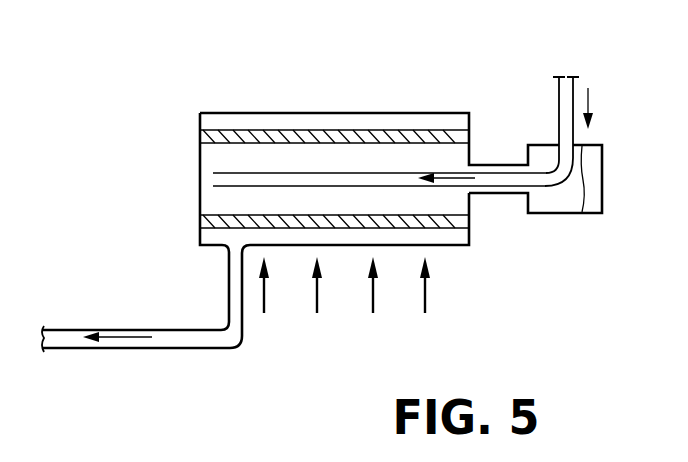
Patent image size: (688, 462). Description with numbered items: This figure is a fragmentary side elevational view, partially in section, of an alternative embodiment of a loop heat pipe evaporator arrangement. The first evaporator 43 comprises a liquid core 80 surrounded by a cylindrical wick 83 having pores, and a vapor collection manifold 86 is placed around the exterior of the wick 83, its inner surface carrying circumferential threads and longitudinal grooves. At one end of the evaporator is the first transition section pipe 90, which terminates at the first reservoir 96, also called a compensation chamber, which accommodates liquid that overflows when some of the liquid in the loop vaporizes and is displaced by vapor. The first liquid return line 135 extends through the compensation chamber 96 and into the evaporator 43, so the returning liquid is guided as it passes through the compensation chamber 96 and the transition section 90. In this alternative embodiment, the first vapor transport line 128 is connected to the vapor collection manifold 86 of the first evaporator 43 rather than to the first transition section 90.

The first evaporator 43 is at (224, 95).
The vapor collection manifold 86 is at (360, 122).
The cylindrical wick 83 is at (427, 130).
The liquid core 80 is at (427, 200).
The first transition section pipe 90 is at (508, 197).
The first reservoir 96 is at (557, 200).
The first liquid return line 135 is at (559, 117).
The first vapor transport line 128 is at (193, 348).